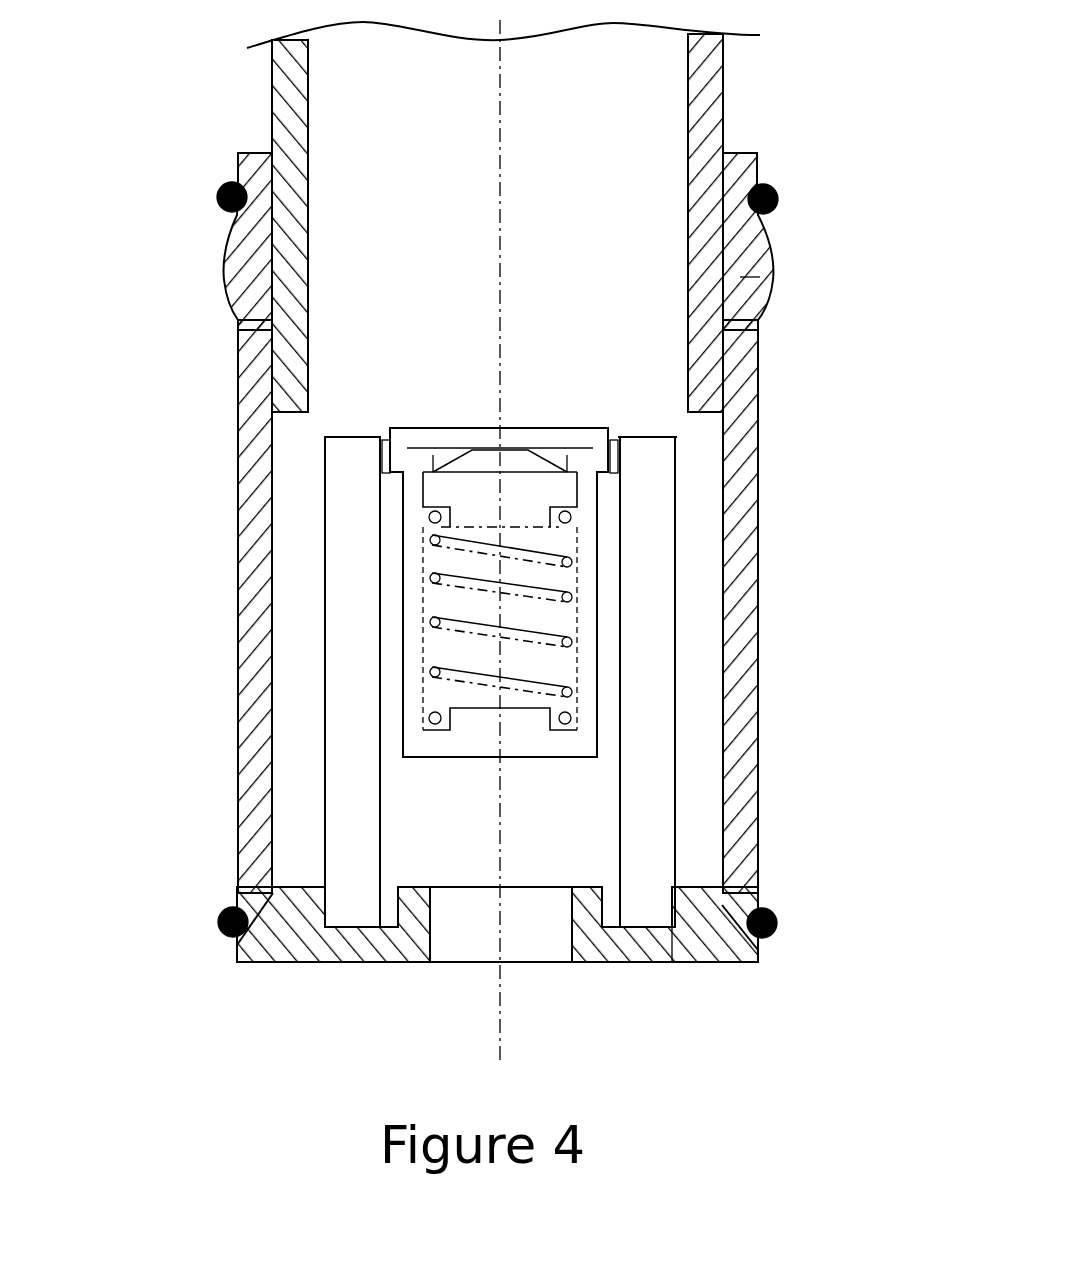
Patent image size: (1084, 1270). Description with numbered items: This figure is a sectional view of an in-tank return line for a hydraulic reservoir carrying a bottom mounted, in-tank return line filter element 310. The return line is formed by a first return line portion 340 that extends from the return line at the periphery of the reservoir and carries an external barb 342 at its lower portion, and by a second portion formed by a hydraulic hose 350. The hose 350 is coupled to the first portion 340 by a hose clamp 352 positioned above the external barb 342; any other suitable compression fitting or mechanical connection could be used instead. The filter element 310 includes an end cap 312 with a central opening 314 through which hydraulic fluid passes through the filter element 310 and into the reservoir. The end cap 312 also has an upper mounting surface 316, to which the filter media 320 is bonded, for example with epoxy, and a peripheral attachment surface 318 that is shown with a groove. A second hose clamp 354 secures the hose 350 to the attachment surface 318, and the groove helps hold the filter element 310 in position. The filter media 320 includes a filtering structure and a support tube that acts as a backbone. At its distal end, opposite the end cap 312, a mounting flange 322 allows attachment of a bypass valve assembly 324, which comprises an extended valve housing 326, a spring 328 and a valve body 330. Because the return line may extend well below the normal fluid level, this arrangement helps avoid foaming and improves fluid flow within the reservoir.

The filter element 310 is at (397, 982).
The end cap 312 is at (612, 962).
The central opening 314 is at (570, 925).
The upper mounting surface 316 is at (672, 962).
The peripheral attachment surface 318 is at (758, 962).
The filter media 320 is at (350, 490).
The mounting flange 322 is at (677, 463).
The bypass valve assembly 324 is at (565, 404).
The extended valve housing 326 is at (418, 473).
The spring 328 is at (568, 643).
The valve body 330 is at (552, 490).
The first return line portion 340 is at (712, 98).
The external barb 342 is at (735, 277).
The hydraulic hose 350 is at (237, 830).
The hose clamp 352 is at (778, 202).
The hose clamp 354 is at (778, 924).